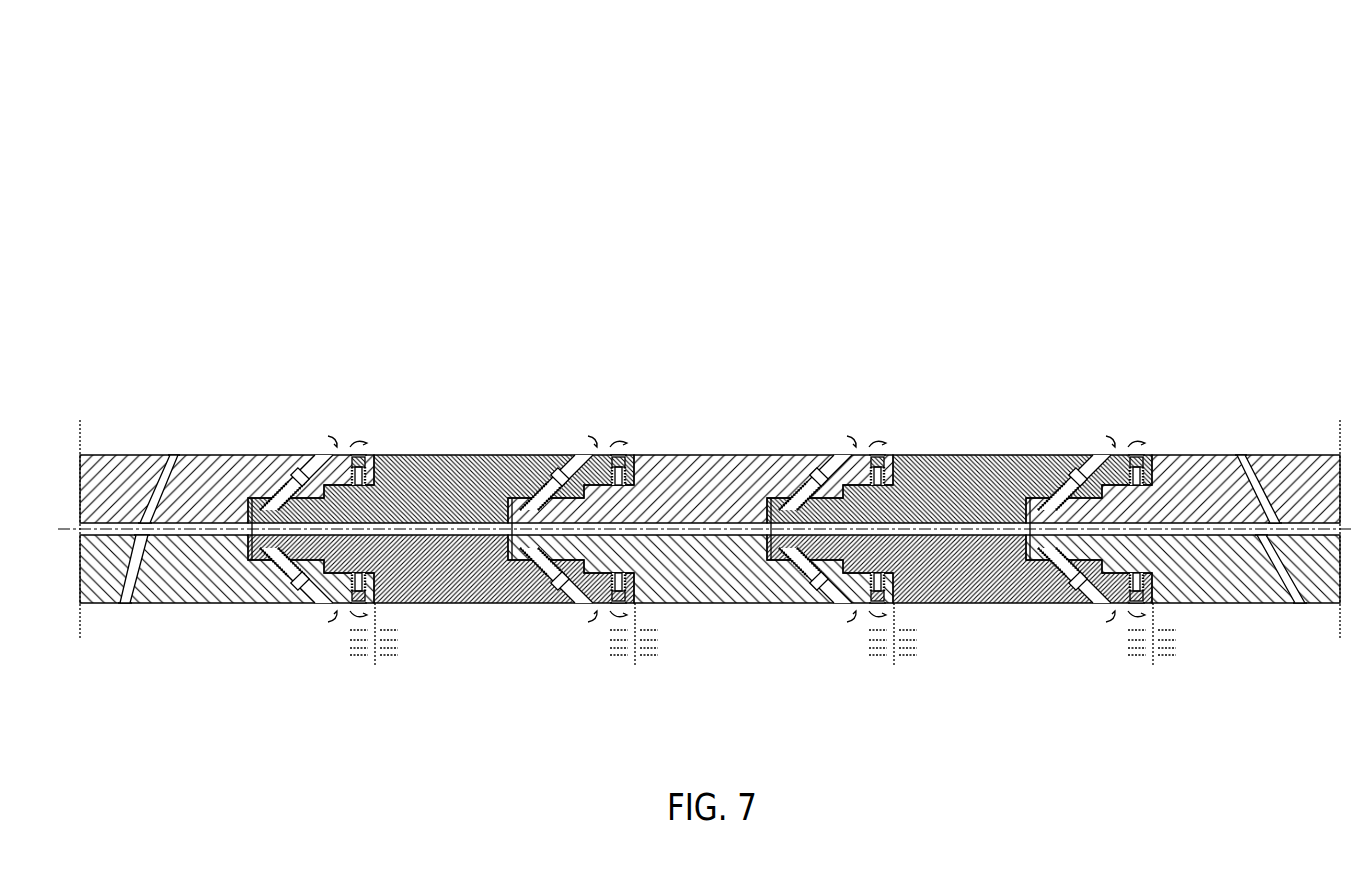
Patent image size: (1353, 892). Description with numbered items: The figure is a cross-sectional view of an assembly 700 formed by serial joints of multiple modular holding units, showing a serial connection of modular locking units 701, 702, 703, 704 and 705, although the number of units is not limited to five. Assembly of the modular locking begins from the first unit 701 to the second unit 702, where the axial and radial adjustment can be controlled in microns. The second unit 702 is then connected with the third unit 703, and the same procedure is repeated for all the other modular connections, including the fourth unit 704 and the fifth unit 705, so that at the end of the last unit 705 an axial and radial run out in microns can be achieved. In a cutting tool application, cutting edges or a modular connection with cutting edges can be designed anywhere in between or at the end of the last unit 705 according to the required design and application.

The pipe assembly 700 is at (458, 151).
The modular locking 701 is at (222, 461).
The modular locking 702 is at (441, 453).
The modular locking 703 is at (698, 452).
The modular locking 704 is at (946, 453).
The modular locking 705 is at (1203, 453).